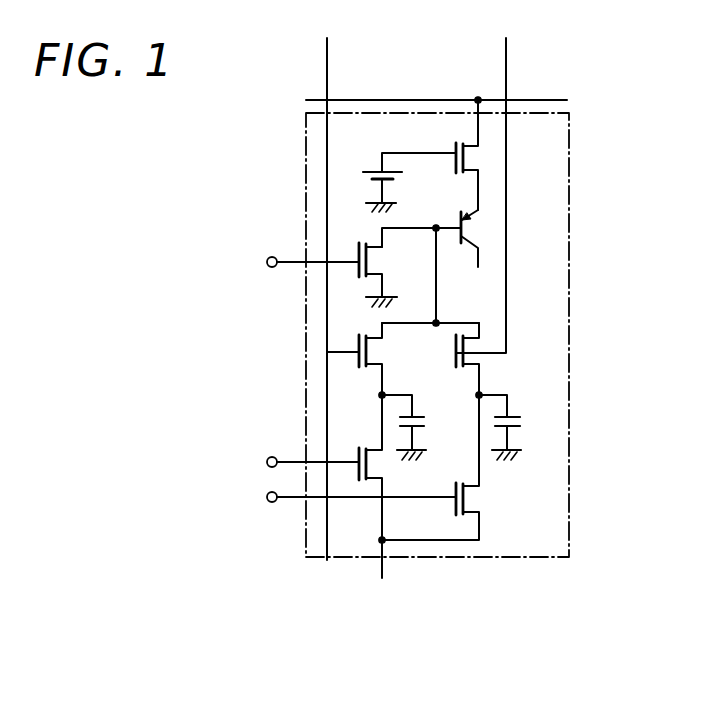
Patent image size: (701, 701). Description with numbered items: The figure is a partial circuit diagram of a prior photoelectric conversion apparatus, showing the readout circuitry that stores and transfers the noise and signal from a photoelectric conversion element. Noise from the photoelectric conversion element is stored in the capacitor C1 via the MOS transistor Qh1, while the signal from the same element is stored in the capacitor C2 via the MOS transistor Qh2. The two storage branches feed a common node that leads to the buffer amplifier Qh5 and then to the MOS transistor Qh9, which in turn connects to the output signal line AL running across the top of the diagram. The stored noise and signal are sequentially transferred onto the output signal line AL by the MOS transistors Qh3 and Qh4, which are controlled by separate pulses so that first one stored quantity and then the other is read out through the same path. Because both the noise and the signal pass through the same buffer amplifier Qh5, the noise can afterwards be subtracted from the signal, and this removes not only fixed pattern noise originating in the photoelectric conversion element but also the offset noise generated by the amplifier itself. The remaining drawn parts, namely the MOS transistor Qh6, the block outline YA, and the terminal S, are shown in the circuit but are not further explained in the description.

The MOS transistor Qh1 is at (354, 467).
The MOS transistor Qh2 is at (452, 467).
The MOS transistor Qh3 is at (374, 359).
The MOS transistor Qh4 is at (491, 359).
The buffer amplifier Qh5 is at (430, 255).
The MOS transistor Qh6 is at (390, 275).
The MOS transistor Qh9 is at (420, 156).
The capacitor C1 is at (411, 425).
The capacitor C2 is at (507, 425).
The output signal line AL is at (436, 88).
The circuit block YA is at (570, 178).
The output terminal S is at (392, 580).